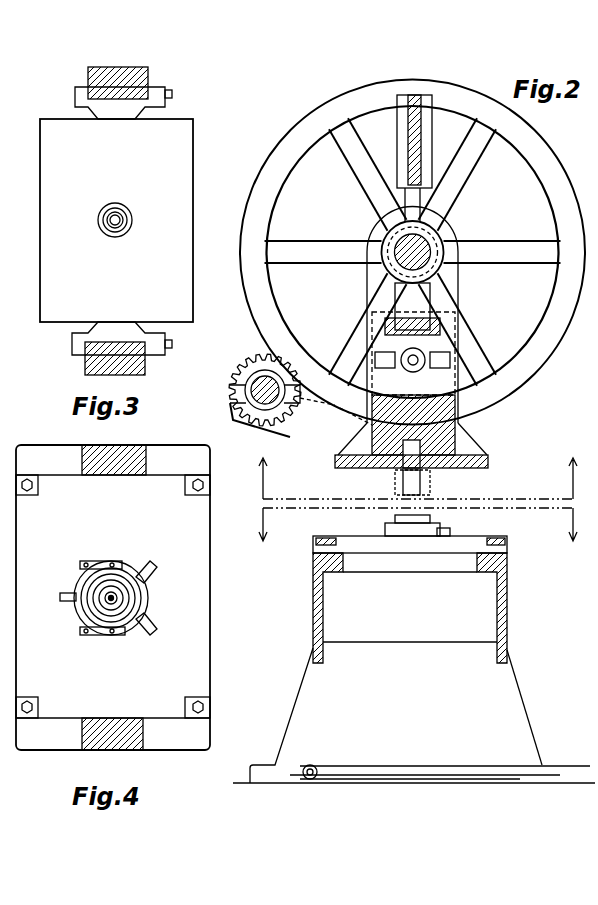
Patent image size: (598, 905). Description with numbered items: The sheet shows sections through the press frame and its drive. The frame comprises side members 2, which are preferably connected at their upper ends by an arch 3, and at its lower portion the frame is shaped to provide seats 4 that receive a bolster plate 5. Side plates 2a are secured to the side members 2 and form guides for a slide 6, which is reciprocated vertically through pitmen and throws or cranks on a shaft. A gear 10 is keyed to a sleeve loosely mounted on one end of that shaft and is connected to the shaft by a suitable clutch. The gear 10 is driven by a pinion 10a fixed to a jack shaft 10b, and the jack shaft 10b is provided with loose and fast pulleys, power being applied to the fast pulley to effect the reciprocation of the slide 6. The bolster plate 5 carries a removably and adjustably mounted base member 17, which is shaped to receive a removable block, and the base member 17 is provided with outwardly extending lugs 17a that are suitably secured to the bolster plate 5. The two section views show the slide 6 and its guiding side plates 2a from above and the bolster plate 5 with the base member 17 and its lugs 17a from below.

In FIG. 3, the side members 2 is at (148, 366).
In FIG. 4, the side members 2 is at (120, 465).
In FIG. 3, the side plates 2a is at (166, 341).
In FIG. 2, the arch 3 is at (415, 473).
In FIG. 2, the seats 4 is at (414, 537).
In FIG. 2, the bolster plate 5 is at (345, 540).
In FIG. 4, the bolster plate 5 is at (210, 662).
In FIG. 2, the slide 6 is at (468, 448).
In FIG. 3, the slide 6 is at (185, 159).
In FIG. 2, the gear 10 is at (252, 302).
In FIG. 3, the gear 10 is at (160, 220).
In FIG. 2, the pinion 10a is at (250, 362).
In FIG. 2, the jack shaft 10b is at (245, 393).
In FIG. 2, the base member 17 is at (443, 527).
In FIG. 4, the lugs 17a is at (150, 567).